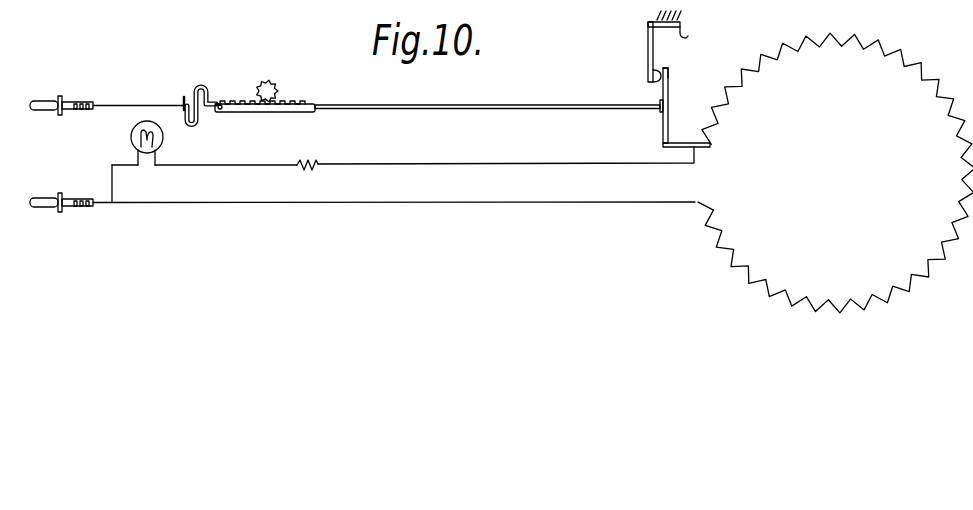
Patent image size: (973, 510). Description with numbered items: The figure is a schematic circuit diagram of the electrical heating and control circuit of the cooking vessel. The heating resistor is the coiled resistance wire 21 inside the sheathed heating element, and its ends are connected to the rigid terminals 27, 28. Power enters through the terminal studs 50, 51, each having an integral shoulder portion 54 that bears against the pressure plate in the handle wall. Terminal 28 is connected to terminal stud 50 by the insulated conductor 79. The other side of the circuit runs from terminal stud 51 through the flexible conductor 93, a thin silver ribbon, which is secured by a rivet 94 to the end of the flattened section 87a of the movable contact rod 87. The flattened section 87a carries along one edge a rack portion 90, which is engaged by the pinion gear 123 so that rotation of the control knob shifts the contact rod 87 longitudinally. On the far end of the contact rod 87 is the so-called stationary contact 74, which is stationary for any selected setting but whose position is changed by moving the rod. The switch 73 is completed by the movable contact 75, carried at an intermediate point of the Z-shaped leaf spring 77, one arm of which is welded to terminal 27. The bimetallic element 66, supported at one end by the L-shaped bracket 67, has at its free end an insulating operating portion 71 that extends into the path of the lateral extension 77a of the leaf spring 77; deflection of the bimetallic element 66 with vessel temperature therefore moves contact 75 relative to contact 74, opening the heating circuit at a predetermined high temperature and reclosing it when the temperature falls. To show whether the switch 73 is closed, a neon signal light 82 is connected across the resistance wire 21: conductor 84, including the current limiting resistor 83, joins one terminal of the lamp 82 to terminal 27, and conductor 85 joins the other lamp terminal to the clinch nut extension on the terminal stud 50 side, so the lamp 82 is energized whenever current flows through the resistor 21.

The coiled resistance wire 21 is at (716, 256).
The rigid terminal 27 is at (706, 142).
The rigid terminal 28 is at (698, 202).
The terminal stud 50 is at (49, 208).
The terminal stud 51 is at (44, 100).
The integral shoulder portion 54 is at (63, 98).
The bimetallic element 66 is at (648, 50).
The L-shaped bracket 67 is at (685, 33).
The insulating operating portion 71 is at (658, 72).
The switch 73 is at (650, 118).
The stationary contact 74 is at (650, 104).
The movable contact 75 is at (662, 118).
The leaf spring 77 is at (669, 122).
The lateral extension 77a is at (669, 78).
The conductor 79 is at (452, 203).
The signal light 82 is at (163, 142).
The current limiting resistor 83 is at (318, 164).
The conductor 84 is at (510, 163).
The conductor 85 is at (112, 180).
The contact rod 87 is at (503, 105).
The flattened section 87a is at (266, 113).
The rack portion 90 is at (296, 101).
The flexible conductor 93 is at (197, 87).
The rivet 94 is at (223, 103).
The pinion gear 123 is at (274, 84).